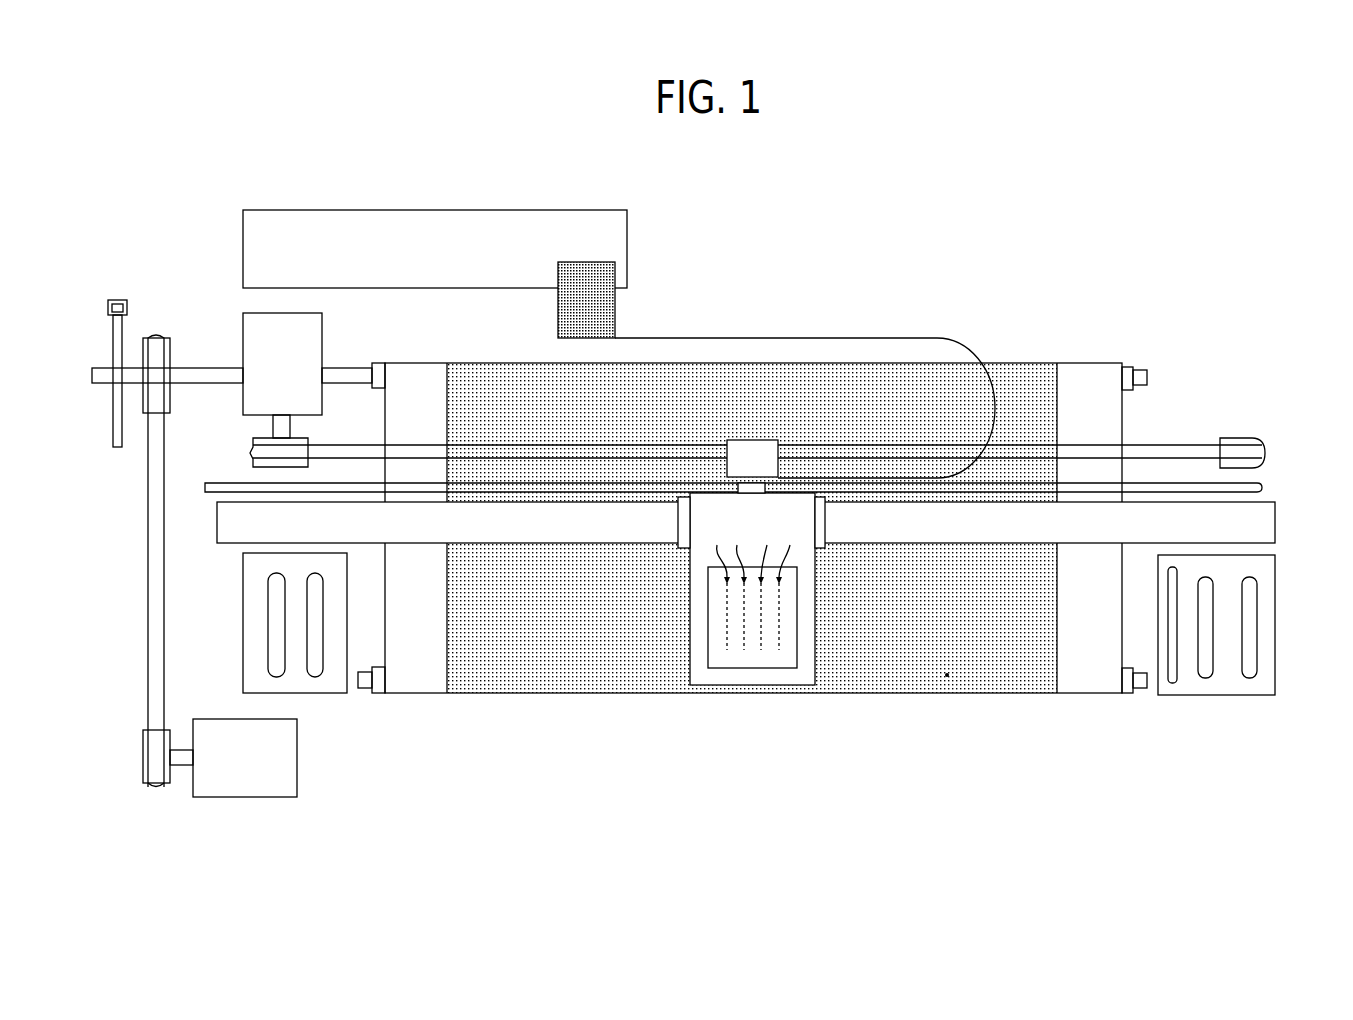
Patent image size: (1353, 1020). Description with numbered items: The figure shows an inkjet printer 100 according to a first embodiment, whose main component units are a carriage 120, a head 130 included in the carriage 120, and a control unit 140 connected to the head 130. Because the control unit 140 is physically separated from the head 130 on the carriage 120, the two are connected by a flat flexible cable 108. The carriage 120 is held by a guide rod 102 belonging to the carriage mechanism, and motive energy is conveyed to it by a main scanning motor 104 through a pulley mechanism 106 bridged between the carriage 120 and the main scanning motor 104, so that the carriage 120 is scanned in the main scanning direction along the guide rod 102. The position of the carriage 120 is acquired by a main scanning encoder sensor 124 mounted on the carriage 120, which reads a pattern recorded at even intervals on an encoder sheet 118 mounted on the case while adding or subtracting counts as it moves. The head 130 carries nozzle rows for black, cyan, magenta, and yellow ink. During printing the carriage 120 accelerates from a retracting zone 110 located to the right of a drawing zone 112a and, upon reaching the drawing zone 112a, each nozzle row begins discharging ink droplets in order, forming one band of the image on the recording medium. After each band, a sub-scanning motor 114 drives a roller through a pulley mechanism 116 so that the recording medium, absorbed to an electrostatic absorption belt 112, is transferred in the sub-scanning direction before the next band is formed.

The inkjet printer 100 is at (163, 202).
The guide rod 102 is at (1275, 522).
The main scanning motor 104 is at (322, 330).
The pulley mechanism 106 is at (1175, 443).
The flat flexible cable 108 is at (800, 337).
The retracting zone 110 is at (1227, 682).
The electrostatic absorption belt 112 is at (416, 676).
The drawing zone 112a is at (947, 677).
The sub-scanning motor 114 is at (297, 752).
The pulley mechanism 116 is at (147, 556).
The encoder sheet 118 is at (1262, 488).
The carriage 120 is at (797, 681).
The main scanning encoder sensor 124 is at (753, 493).
The head 130 is at (731, 670).
The control unit 140 is at (243, 248).